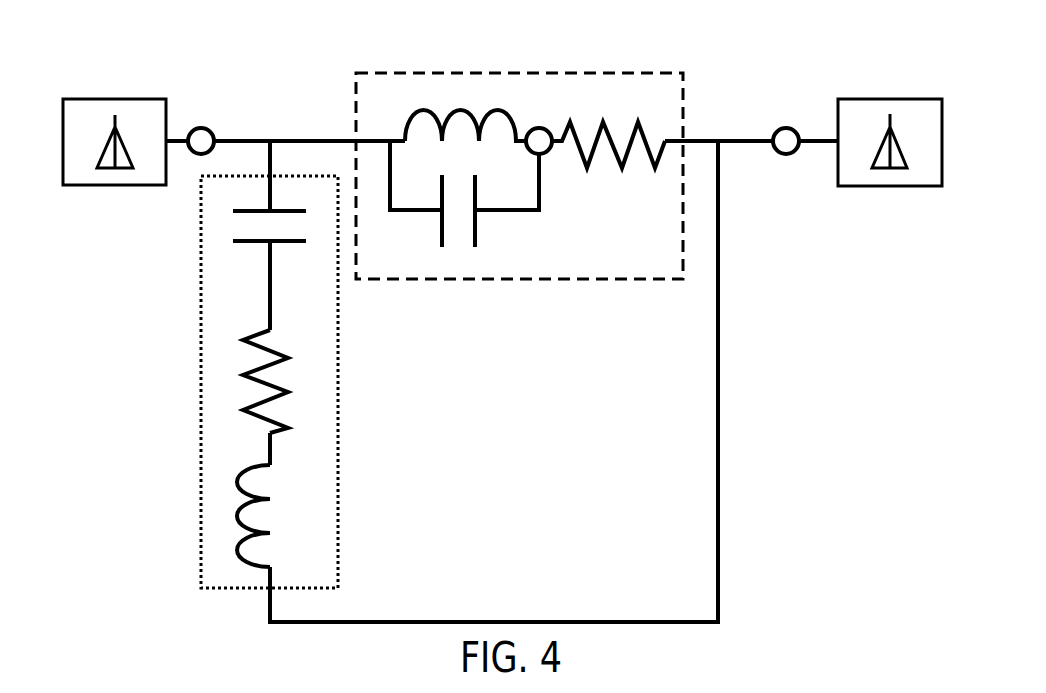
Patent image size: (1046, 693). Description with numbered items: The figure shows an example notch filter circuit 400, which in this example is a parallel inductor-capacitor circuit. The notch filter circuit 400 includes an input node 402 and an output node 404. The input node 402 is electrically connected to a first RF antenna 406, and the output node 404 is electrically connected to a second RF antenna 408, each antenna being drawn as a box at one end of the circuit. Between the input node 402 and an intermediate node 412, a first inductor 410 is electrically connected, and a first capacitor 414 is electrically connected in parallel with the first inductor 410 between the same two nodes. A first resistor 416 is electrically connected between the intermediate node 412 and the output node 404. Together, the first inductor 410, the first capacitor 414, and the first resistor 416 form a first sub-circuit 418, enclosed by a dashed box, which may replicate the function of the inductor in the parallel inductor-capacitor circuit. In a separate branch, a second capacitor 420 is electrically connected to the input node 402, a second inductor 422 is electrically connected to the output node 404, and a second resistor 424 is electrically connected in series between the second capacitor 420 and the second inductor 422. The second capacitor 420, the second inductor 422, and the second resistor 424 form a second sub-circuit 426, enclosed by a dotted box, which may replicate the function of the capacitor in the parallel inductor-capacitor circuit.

The notch filter circuit 400 is at (749, 64).
The input node 402 is at (212, 121).
The output node 404 is at (786, 123).
The first RF antenna 406 is at (80, 98).
The second RF antenna 408 is at (856, 98).
The first inductor 410 is at (456, 108).
The intermediate node 412 is at (541, 123).
The first capacitor 414 is at (478, 222).
The first resistor 416 is at (650, 162).
The first sub-circuit 418 is at (577, 281).
The second capacitor 420 is at (263, 243).
The second inductor 422 is at (268, 495).
The second resistor 424 is at (274, 348).
The second sub-circuit 426 is at (200, 403).